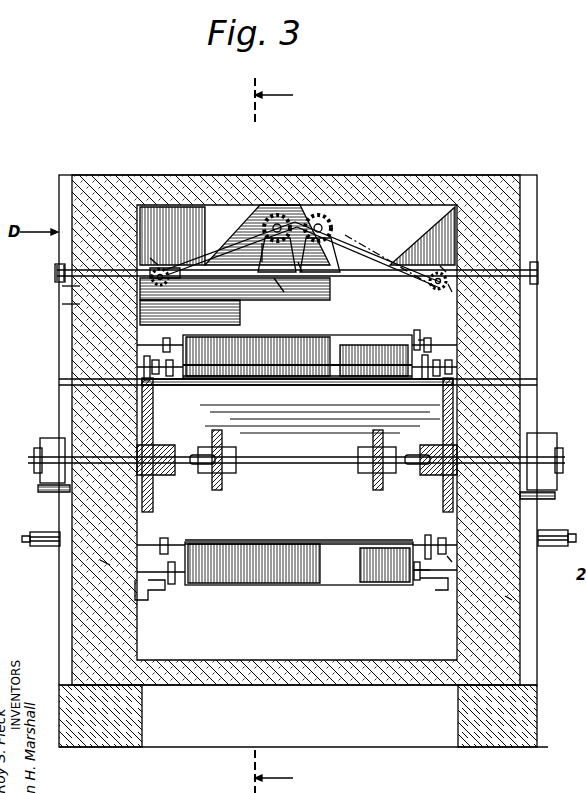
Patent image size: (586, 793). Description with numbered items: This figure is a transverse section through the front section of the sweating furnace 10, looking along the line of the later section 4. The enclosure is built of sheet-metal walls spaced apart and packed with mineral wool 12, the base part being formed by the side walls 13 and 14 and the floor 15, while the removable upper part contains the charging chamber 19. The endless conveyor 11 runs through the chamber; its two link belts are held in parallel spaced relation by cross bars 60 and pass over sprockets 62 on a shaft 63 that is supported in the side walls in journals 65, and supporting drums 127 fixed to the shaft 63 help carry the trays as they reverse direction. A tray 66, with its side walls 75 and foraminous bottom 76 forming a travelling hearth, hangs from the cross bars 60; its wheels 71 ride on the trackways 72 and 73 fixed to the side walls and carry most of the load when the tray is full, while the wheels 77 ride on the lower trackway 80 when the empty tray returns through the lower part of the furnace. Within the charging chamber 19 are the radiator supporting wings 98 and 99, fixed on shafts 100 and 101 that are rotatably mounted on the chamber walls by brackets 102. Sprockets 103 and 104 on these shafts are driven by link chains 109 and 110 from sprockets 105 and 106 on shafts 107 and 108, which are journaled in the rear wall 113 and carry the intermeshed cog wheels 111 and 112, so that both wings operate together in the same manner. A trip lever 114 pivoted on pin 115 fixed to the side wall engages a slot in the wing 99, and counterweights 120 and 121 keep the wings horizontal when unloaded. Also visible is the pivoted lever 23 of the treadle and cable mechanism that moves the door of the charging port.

The section line 4- 4 is at (284, 775).
The furnace 10 is at (120, 166).
The endless conveyor 11 is at (450, 560).
The mineral wool 12 is at (470, 376).
The side wall 13 is at (510, 598).
The side wall 14 is at (110, 565).
The floor 15 is at (372, 688).
The charging chamber 19 is at (176, 212).
The pivoted lever 23 is at (44, 533).
The cross bars 60 is at (440, 355).
The sprockets 62 is at (153, 413).
The shaft 63 is at (258, 465).
The journals 65 is at (50, 440).
The trays 66 is at (310, 534).
The wheels 71 is at (140, 358).
The trackway 72 is at (425, 380).
The trackway 73 is at (170, 384).
The side wall 75 is at (272, 594).
The foraminous bottom 76 is at (238, 378).
The wheels 77 is at (428, 340).
The trackway 80 is at (172, 590).
The radiator supporting wing 98 is at (393, 280).
The radiator supporting wing 99 is at (185, 263).
The shaft 100 is at (432, 284).
The shaft 101 is at (162, 285).
The brackets 102 is at (452, 290).
The sprocket 103 is at (440, 268).
The sprocket 104 is at (157, 263).
The sprocket 105 is at (340, 235).
The sprocket 106 is at (282, 214).
The shaft 107 is at (318, 238).
The shaft 108 is at (276, 272).
The link chain 109 is at (410, 210).
The link chain 110 is at (248, 252).
The cog wheel 111 is at (320, 214).
The cog wheel 112 is at (263, 243).
The rear wall 113 is at (385, 222).
The trip lever 114 is at (130, 309).
The pin 115 is at (137, 292).
The counterweight 120 is at (301, 272).
The counterweight 121 is at (280, 292).
The supporting drums 127 is at (222, 438).